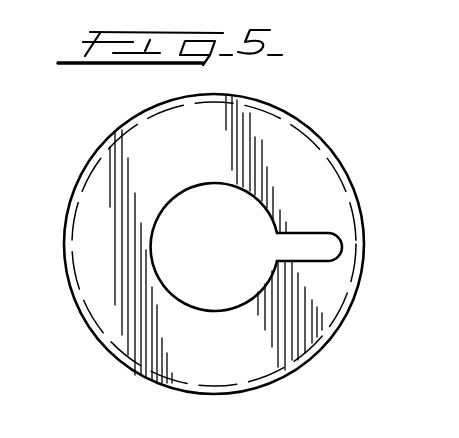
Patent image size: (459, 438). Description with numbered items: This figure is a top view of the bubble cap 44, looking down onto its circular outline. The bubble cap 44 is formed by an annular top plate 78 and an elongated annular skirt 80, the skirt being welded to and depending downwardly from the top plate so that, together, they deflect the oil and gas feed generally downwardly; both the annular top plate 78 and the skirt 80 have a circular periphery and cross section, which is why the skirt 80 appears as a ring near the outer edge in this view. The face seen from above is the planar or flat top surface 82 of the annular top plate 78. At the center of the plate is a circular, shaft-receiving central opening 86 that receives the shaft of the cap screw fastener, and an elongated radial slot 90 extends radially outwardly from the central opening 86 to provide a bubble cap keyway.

The bubble cap 44 is at (116, 359).
The annular top plate 78 is at (116, 184).
The elongated annular skirt 80 is at (335, 318).
The flat top surface 82 is at (240, 137).
The central opening 86 is at (257, 198).
The elongated radial slot 90 is at (313, 232).